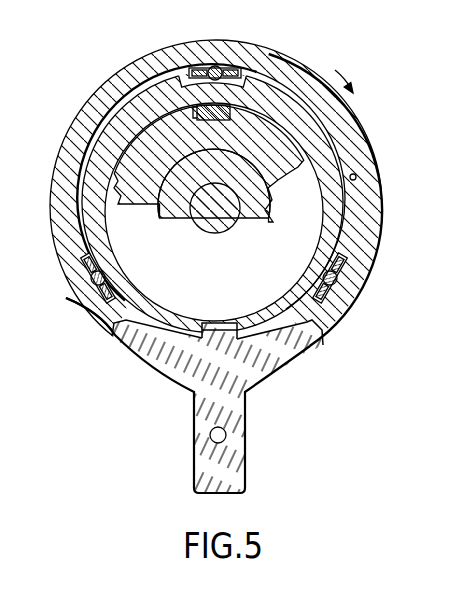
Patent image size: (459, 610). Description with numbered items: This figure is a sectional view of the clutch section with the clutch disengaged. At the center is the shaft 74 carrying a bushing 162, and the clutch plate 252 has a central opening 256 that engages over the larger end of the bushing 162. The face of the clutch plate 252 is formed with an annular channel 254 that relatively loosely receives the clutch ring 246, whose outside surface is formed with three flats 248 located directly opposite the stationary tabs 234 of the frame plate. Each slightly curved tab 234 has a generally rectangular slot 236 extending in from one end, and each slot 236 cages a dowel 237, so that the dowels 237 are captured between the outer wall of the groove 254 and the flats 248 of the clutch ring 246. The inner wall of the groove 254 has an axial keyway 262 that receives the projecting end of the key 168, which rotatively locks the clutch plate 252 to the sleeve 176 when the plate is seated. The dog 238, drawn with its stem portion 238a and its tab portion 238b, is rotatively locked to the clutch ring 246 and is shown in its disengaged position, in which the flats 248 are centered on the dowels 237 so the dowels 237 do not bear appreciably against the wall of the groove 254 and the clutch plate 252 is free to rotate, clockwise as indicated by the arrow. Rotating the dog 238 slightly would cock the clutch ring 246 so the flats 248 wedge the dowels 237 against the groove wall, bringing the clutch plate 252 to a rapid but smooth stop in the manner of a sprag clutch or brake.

The shaft 74 is at (222, 230).
The bushing 162 is at (176, 219).
The key 168 is at (185, 108).
The sleeve 176 is at (150, 110).
The laterally extending tabs 234 is at (232, 68).
The rectangular slot 236 is at (326, 270).
The dowel 237 is at (215, 66).
The dog 238 is at (290, 368).
The hub stem hole 238a is at (233, 458).
The hub key tab 238b is at (213, 323).
The clutch ring 246 is at (346, 213).
The flats 248 is at (270, 68).
The clutch plate 252 is at (355, 128).
The annular channel 254 is at (356, 177).
The central opening 256 is at (273, 198).
The axial keyway 262 is at (133, 72).